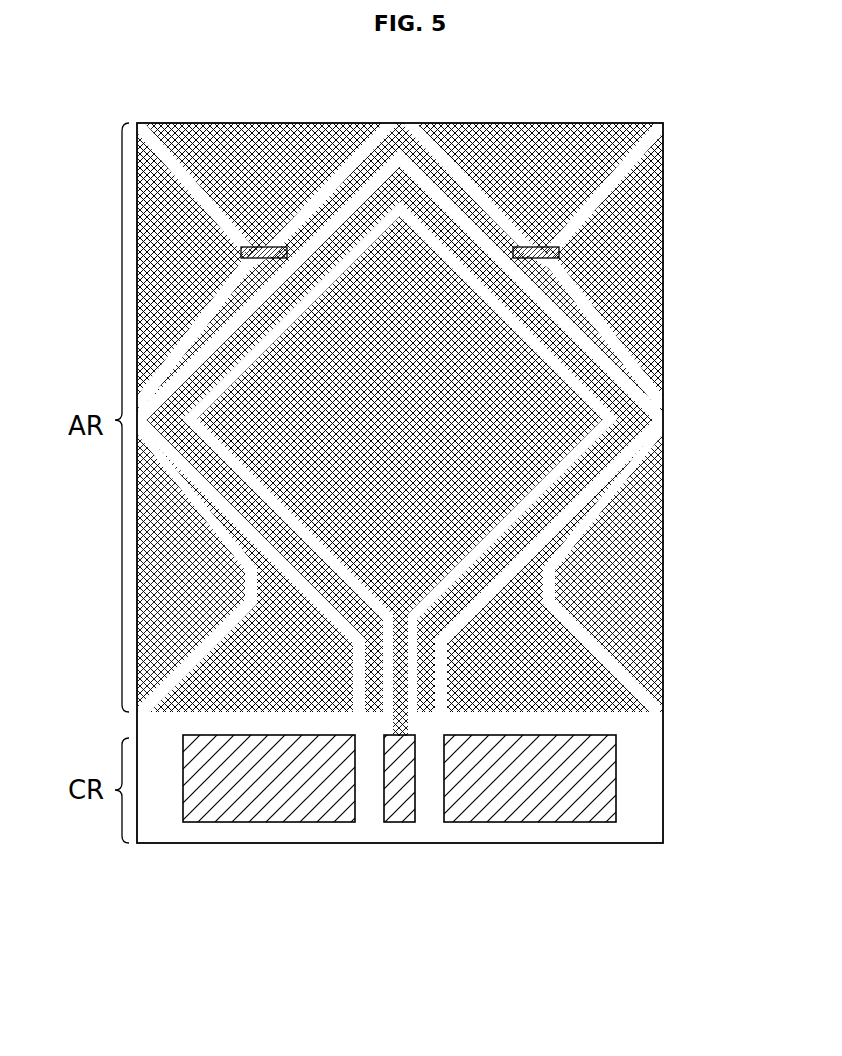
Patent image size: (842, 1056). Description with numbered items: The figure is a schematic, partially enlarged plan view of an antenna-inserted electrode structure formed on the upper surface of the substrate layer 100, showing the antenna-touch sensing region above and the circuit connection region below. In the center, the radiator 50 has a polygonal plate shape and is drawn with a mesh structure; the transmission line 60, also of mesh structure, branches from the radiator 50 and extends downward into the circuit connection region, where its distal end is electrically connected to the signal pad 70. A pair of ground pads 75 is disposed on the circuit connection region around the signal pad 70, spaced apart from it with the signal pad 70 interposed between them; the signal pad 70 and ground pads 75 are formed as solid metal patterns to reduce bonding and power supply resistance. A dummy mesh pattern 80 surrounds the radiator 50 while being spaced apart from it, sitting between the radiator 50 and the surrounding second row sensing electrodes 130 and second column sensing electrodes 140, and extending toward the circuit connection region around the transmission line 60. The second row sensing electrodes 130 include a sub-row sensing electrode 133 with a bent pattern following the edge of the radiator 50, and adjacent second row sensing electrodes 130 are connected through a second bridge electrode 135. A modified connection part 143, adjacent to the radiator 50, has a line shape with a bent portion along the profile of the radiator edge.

The radiator 50 is at (490, 480).
The transmission line 60 is at (402, 683).
The signal pad 70 is at (392, 815).
The ground pads 75 is at (266, 815).
The dummy mesh pattern 80 is at (550, 478).
The substrate layer 100 is at (653, 781).
The second row sensing electrodes 130 is at (559, 254).
The sub-row sensing electrode 133 is at (447, 178).
The second bridge electrode 135 is at (559, 255).
The second column sensing electrodes 140 is at (582, 170).
The modified connection part 143 is at (633, 373).